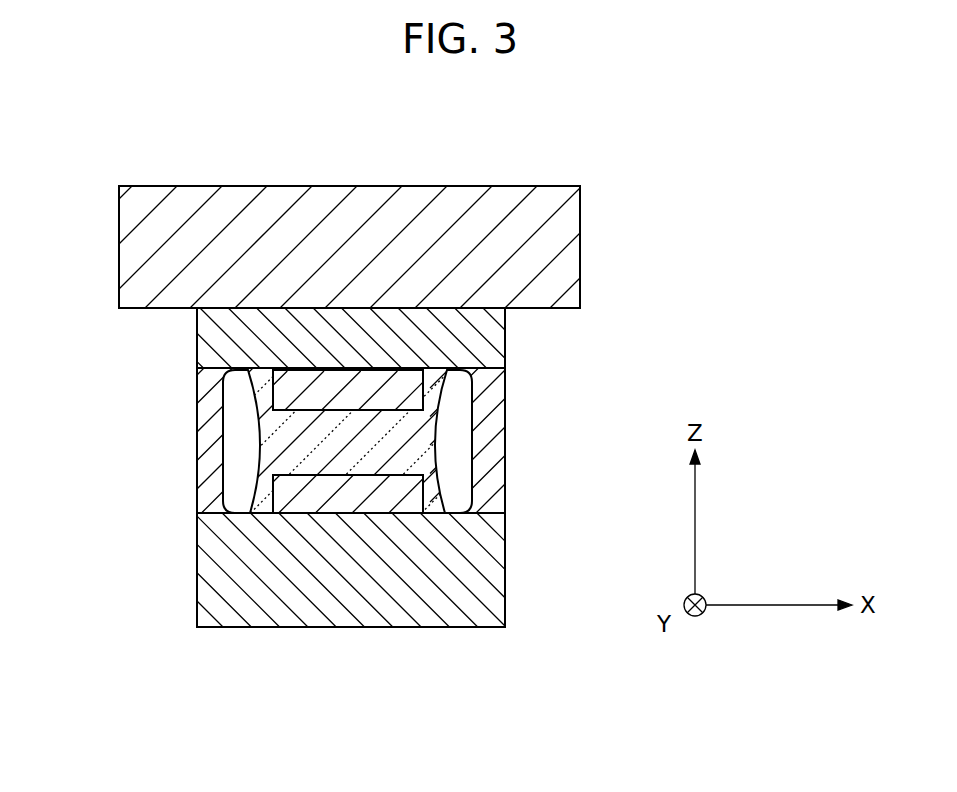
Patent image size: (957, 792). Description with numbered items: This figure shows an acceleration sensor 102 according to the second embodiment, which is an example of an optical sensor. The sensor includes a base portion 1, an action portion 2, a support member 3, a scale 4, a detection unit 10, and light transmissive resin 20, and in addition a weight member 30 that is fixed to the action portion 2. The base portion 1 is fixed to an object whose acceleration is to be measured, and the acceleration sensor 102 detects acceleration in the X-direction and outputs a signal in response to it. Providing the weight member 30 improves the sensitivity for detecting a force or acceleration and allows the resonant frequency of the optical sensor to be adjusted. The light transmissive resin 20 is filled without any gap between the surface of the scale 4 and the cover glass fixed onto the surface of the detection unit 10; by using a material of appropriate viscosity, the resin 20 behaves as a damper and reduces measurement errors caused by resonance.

The acceleration sensor 102 is at (612, 170).
The weight member 30 is at (133, 247).
The action portion 2 is at (505, 347).
The support member 3 is at (505, 402).
The scale 4 is at (288, 383).
The light transmissive resin 20 is at (402, 457).
The detection unit 10 is at (306, 500).
The base portion 1 is at (505, 560).